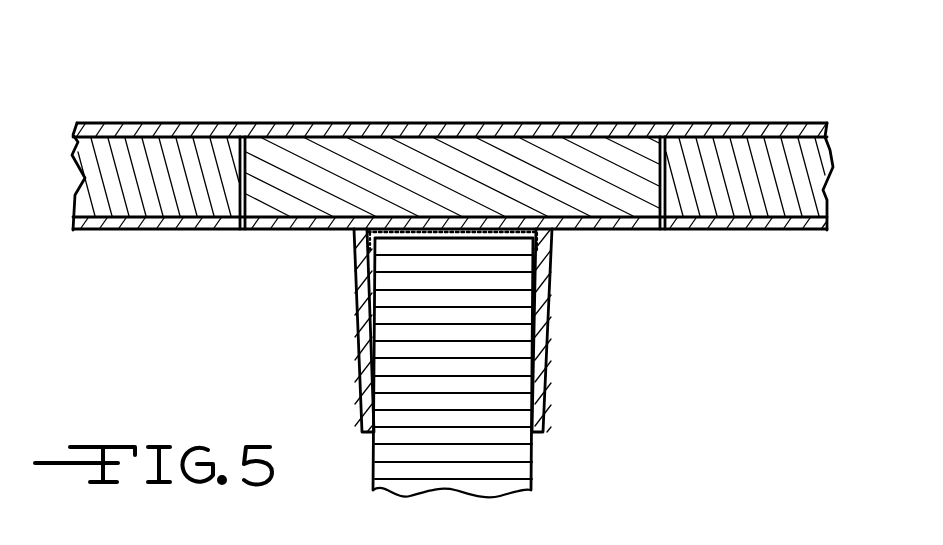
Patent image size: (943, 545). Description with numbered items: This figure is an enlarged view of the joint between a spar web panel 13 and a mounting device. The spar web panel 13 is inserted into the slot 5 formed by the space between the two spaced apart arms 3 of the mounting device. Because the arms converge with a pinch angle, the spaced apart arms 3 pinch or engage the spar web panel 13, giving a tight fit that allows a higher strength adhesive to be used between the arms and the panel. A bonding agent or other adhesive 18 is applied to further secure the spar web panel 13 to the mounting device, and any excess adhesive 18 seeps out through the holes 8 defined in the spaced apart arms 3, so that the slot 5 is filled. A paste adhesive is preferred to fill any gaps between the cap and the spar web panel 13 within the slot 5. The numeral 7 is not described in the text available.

The sandwich panel 7 is at (502, 168).
The adhesive 18 is at (420, 231).
The holes 8 is at (370, 250).
The spaced apart arms 3 is at (355, 297).
The spar web panel 13 is at (453, 371).
The slot 5 is at (450, 363).